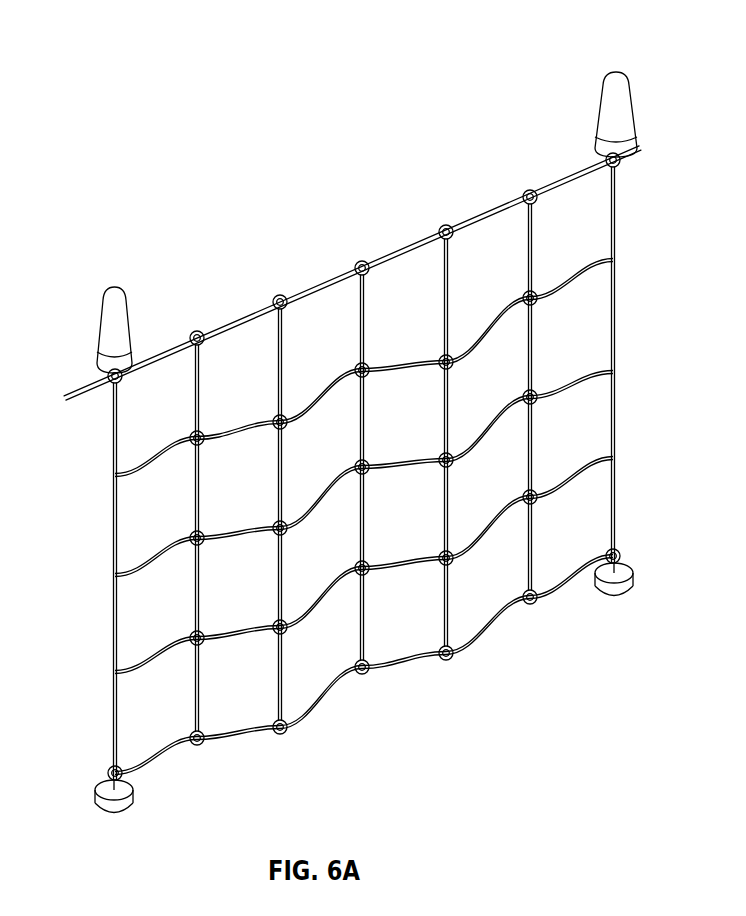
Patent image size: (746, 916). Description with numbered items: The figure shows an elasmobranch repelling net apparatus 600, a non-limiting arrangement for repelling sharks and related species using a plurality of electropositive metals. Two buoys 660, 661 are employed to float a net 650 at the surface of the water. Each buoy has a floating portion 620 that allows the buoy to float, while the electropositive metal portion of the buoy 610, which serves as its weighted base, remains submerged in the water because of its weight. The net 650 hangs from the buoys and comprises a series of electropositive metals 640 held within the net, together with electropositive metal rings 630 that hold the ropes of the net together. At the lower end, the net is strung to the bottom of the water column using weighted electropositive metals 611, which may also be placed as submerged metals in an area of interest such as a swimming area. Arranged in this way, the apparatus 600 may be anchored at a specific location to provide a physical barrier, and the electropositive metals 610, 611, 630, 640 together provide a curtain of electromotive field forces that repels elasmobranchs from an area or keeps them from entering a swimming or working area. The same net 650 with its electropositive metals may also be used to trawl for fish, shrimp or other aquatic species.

The elasmobranch repelling net apparatus 600 is at (158, 140).
The electropositive metal portion of the buoy 610 is at (596, 140).
The weighted electropositive metal 611 is at (637, 577).
The floating portion of the buoy 620 is at (597, 110).
The electropositive metal ring 630 is at (622, 167).
The electropositive metal 640 is at (537, 287).
The net 650 is at (617, 347).
The buoy 660 is at (115, 288).
The buoy 661 is at (617, 73).